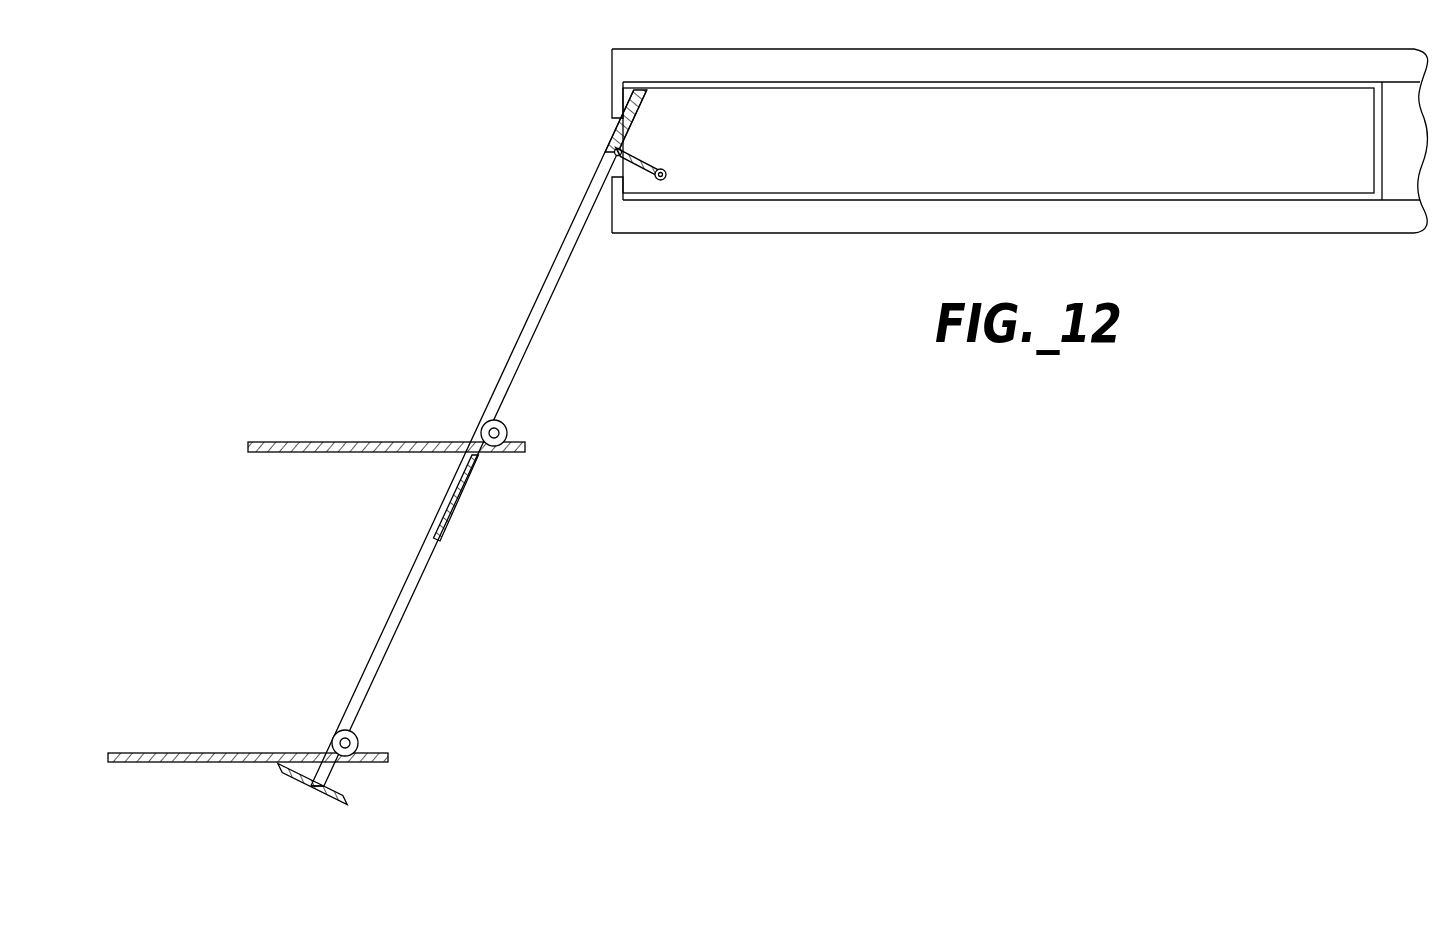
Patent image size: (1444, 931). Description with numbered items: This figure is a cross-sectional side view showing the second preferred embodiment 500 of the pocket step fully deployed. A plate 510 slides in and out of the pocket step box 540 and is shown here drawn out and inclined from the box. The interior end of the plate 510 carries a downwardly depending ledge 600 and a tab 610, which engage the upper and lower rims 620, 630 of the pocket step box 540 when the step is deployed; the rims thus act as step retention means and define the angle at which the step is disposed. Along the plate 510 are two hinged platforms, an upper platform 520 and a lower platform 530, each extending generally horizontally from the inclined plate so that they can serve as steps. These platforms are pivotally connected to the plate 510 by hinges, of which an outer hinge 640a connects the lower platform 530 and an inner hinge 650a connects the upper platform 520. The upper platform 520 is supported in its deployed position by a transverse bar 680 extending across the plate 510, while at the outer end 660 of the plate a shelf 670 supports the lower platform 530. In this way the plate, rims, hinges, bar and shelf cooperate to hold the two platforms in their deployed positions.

The second preferred embodiment 500 is at (447, 228).
The plate 510 is at (531, 345).
The upper platform 520 is at (356, 441).
The lower platform 530 is at (217, 752).
The pocket step box 540 is at (893, 62).
The ledge 600 is at (661, 152).
The tab 610 is at (640, 94).
The upper rim 620 is at (612, 107).
The lower rim 630 is at (617, 190).
The outer hinge 640a is at (358, 738).
The inner hinge 650a is at (508, 430).
The outer end 660 is at (324, 807).
The shelf 670 is at (300, 783).
The transverse bar 680 is at (478, 478).